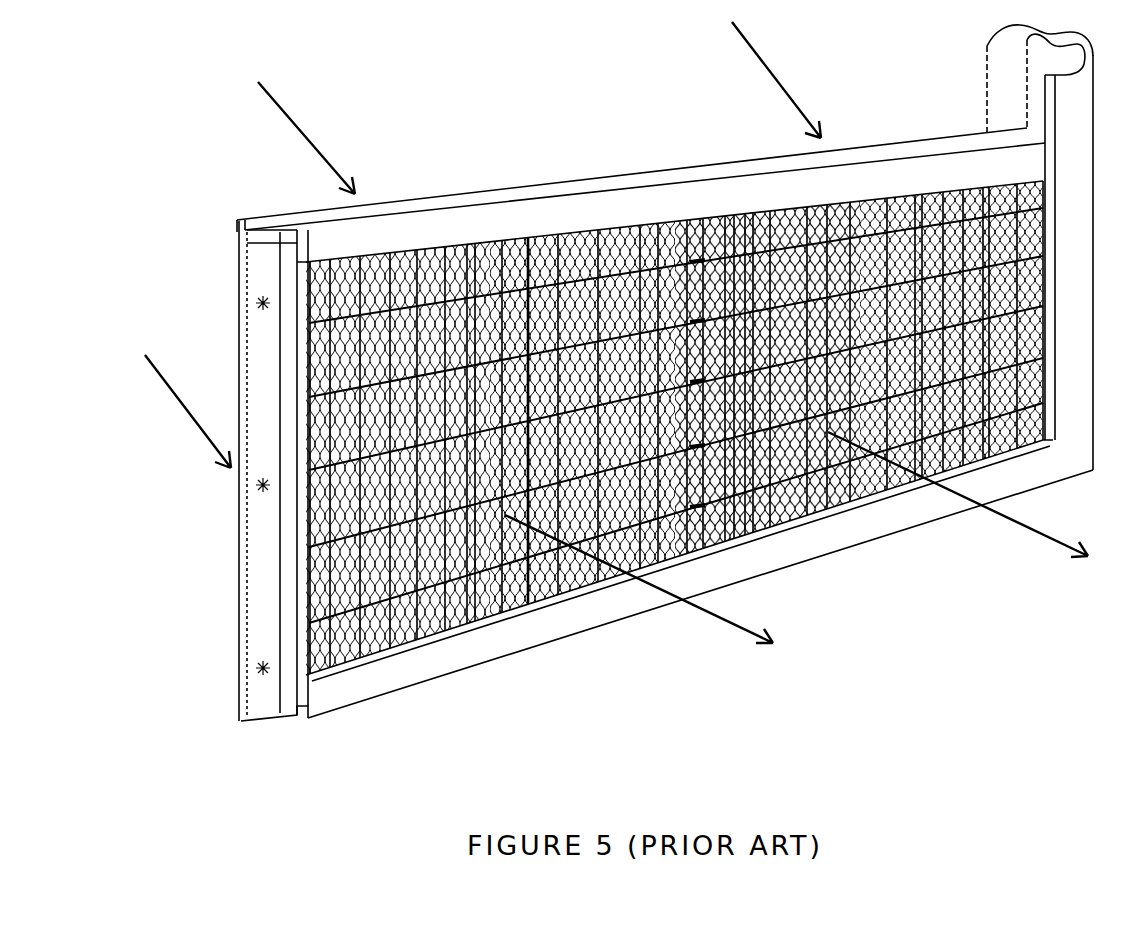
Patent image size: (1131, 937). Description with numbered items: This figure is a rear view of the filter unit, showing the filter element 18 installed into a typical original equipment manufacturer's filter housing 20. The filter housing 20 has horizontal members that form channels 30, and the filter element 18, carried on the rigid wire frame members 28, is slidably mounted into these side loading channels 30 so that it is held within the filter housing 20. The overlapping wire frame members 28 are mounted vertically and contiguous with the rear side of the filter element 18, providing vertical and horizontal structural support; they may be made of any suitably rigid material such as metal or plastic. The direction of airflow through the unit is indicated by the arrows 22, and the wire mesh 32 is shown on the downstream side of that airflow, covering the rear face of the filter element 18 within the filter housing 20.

The filter media 18 is at (340, 640).
The filter housing 20 is at (592, 206).
The arrows 22 is at (992, 508).
The rigid wire frame members 28 is at (598, 570).
The channels 30 is at (263, 249).
The wire mesh 32 is at (505, 607).